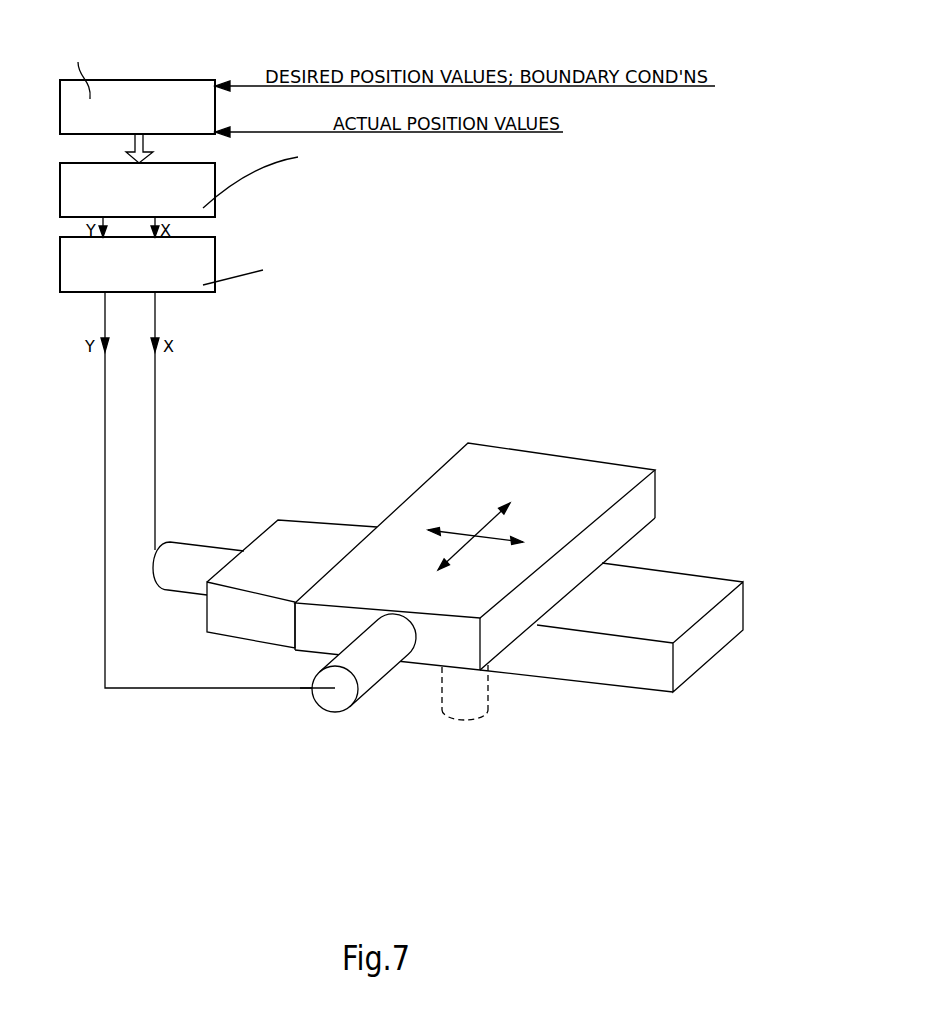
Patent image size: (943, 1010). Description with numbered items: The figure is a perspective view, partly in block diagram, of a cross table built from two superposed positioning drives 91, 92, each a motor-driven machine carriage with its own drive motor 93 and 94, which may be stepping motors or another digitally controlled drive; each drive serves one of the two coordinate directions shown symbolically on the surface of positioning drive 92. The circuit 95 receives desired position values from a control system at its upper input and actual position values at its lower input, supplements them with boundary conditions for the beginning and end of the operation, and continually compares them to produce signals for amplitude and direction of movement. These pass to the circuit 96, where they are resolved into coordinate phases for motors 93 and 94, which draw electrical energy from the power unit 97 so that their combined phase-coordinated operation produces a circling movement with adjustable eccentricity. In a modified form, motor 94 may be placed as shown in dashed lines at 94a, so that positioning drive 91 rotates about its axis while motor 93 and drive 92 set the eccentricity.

The positioning drive 91 is at (708, 635).
The positioning drive 92 is at (575, 490).
The drive motor 93 is at (358, 665).
The drive motor 94 is at (178, 565).
The motor 94a is at (468, 692).
The circuit 95 is at (208, 110).
The circuit 96 is at (208, 195).
The power unit 97 is at (208, 275).